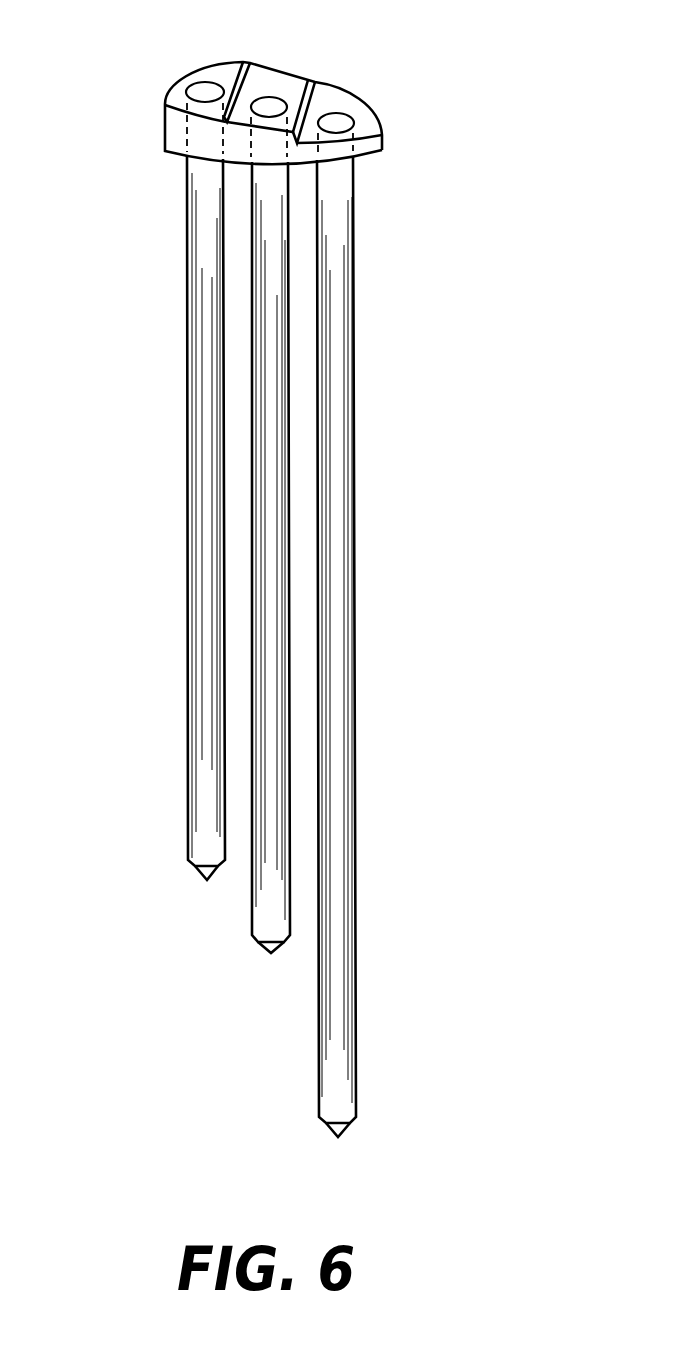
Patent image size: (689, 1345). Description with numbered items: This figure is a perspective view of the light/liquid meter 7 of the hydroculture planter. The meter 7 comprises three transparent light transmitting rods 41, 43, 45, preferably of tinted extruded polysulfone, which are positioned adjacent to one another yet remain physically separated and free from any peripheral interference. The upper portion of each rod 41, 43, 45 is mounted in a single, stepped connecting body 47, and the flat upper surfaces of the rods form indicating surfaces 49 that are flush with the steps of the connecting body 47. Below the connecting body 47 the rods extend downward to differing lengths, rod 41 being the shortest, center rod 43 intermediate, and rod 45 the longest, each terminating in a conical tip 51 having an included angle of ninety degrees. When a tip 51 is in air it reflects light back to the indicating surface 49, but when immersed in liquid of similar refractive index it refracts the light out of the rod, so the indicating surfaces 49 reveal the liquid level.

The light/liquid meter 7 is at (311, 581).
The connecting body 47 is at (163, 132).
The indicating surfaces 49 is at (205, 92).
The light transmitting rod 41 is at (203, 803).
The light transmitting rod 43 is at (268, 910).
The light transmitting rod 45 is at (337, 1062).
The conical tips 51 is at (203, 877).